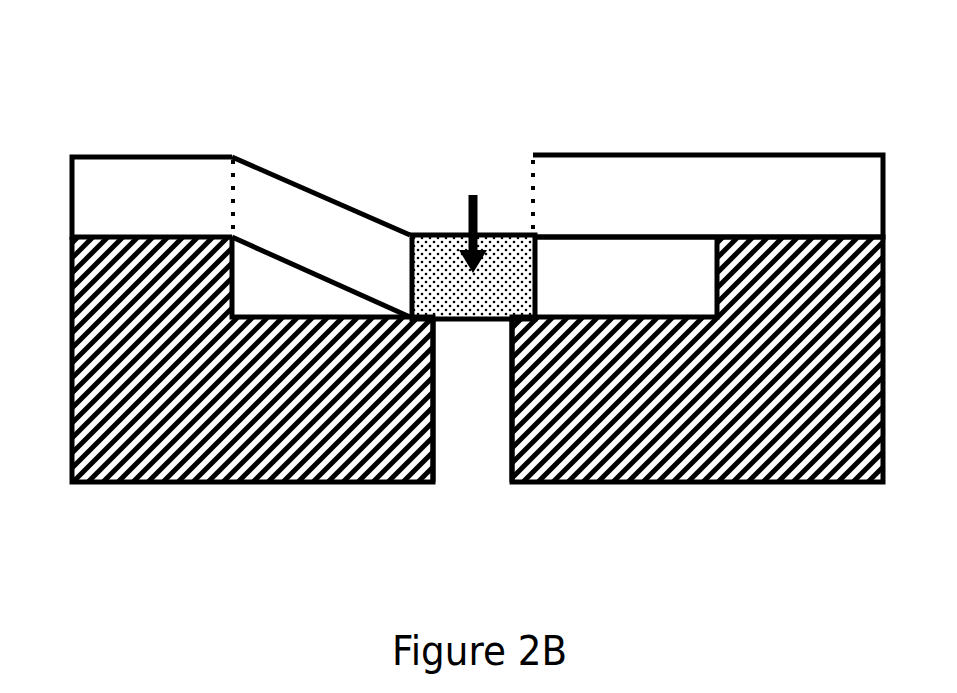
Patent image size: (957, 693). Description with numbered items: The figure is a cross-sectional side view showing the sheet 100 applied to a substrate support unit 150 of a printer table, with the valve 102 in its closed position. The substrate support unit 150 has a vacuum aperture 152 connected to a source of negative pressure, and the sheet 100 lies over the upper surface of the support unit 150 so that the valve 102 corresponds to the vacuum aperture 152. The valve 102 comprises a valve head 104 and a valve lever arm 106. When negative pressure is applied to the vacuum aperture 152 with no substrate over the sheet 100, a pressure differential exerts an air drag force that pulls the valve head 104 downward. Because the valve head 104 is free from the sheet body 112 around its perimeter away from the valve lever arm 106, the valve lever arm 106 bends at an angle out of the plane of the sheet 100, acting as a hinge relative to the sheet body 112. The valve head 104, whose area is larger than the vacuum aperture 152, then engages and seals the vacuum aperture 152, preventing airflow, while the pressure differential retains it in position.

The sheet 100 is at (130, 90).
The valve 102 is at (383, 152).
The valve head 104 is at (500, 258).
The valve lever arm 106 is at (315, 217).
The sheet body 112 is at (612, 178).
The substrate support unit 150 is at (258, 452).
The vacuum aperture 152 is at (470, 342).